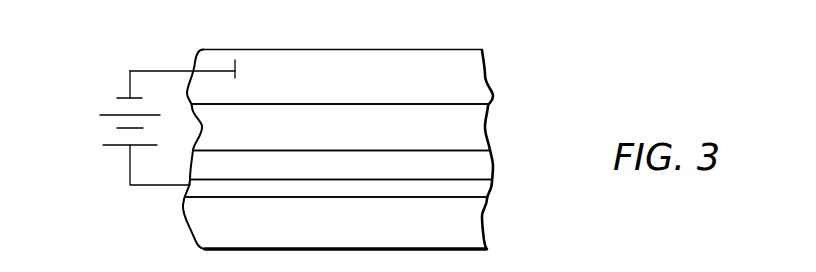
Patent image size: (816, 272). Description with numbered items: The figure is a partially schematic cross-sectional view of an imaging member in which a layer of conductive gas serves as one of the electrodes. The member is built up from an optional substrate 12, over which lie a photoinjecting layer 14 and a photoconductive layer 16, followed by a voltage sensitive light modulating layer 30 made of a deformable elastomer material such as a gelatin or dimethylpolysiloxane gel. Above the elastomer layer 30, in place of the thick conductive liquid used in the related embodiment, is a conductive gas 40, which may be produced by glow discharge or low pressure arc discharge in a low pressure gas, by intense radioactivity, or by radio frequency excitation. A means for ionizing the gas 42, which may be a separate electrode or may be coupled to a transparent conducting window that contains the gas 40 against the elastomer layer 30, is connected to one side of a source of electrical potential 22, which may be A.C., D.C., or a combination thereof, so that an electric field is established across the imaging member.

The substrate 12 is at (475, 231).
The photoinjecting layer 14 is at (479, 190).
The photoconductive layer 16 is at (478, 173).
The voltage sensitive light modulating layer 30 is at (480, 134).
The conductive gas 40 is at (477, 85).
The means for ionizing the gas 42 is at (237, 66).
The source of electrical potential 22 is at (112, 113).